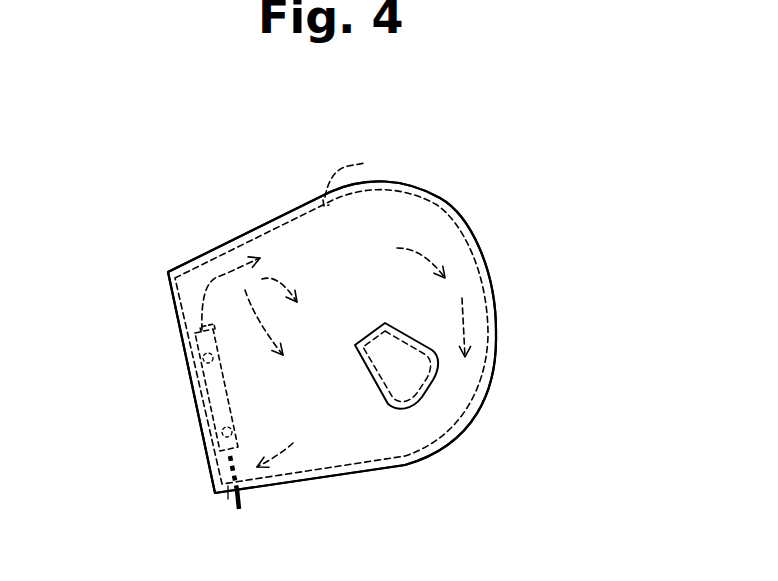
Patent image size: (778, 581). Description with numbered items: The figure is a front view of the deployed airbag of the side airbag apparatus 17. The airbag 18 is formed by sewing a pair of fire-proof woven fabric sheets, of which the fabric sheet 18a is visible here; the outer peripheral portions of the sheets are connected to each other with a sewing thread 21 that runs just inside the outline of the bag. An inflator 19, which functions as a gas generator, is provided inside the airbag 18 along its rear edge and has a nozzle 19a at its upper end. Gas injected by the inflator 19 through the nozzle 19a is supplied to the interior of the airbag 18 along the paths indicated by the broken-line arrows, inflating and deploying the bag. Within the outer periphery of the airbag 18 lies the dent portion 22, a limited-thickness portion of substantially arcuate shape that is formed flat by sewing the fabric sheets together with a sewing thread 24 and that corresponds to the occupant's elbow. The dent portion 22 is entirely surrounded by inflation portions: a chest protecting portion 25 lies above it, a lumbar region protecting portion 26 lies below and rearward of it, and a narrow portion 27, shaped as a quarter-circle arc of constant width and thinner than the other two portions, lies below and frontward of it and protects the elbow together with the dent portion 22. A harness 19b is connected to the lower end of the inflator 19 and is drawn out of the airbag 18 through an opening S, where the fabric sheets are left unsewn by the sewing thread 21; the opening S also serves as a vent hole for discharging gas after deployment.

The side airbag apparatus 17 is at (142, 302).
The airbag 18 is at (507, 286).
The fabric sheet 18a is at (463, 303).
The inflator 19 is at (193, 403).
The nozzle 19a is at (180, 338).
The harness 19b is at (240, 497).
The opening S is at (227, 500).
The sewing thread 21 is at (363, 177).
The dent portion 22 is at (423, 366).
The sewing thread 24 is at (372, 370).
The chest protecting portion 25 is at (365, 245).
The lumbar region protecting portion 26 is at (317, 411).
The narrow portion 27 is at (449, 402).